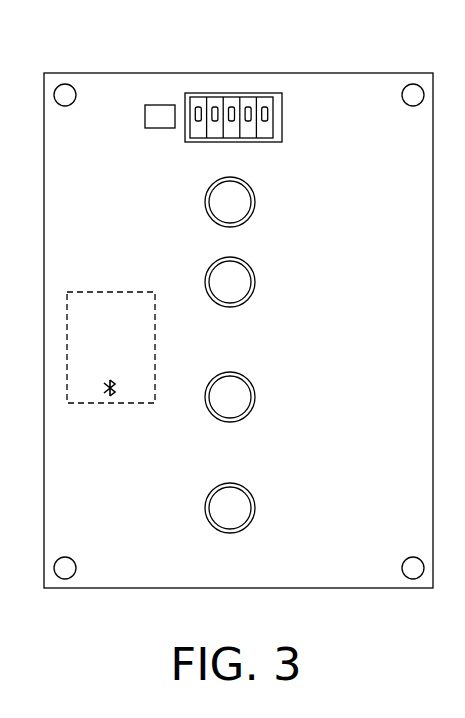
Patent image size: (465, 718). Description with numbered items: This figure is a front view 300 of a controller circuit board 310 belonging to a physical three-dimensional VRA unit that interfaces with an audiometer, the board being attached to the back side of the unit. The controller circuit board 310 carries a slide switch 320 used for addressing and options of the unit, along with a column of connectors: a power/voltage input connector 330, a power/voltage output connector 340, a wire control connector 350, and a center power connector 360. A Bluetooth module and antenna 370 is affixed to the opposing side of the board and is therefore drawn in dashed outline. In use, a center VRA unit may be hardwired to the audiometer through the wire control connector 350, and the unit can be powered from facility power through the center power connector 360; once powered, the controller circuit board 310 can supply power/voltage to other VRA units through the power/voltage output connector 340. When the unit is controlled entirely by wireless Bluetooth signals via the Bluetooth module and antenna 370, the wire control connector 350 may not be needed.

The front view 300 is at (163, 50).
The controller circuit board 310 is at (108, 589).
The slide switch 320 is at (186, 132).
The power/voltage input connector 330 is at (236, 207).
The power/voltage output connector 340 is at (236, 286).
The wire control connector 350 is at (236, 402).
The center power connector 360 is at (236, 512).
The Bluetooth module and antenna 370 is at (136, 403).